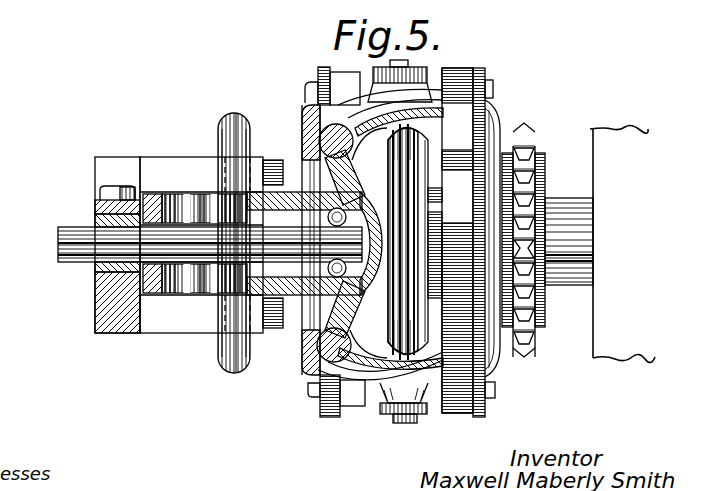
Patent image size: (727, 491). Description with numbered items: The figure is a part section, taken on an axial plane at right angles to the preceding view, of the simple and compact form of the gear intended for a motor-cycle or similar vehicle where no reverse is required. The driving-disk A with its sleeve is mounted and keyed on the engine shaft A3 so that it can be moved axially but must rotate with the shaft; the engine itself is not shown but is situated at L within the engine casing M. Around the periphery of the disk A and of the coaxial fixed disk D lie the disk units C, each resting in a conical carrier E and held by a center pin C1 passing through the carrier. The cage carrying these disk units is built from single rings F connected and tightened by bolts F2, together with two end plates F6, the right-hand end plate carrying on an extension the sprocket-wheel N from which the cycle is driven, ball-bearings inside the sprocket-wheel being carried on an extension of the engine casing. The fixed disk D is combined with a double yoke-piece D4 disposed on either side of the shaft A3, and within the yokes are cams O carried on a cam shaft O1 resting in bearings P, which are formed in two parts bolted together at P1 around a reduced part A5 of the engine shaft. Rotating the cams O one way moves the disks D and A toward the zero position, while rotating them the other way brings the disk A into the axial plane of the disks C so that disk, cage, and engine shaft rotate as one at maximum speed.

The driving-disk A is at (440, 368).
The engine shaft A3 is at (276, 328).
The reduced part of the shaft A5 is at (95, 248).
The disk unit C is at (482, 72).
The center pin C1 is at (403, 425).
The fixed disk D is at (312, 375).
The double yoke-piece D4 is at (140, 222).
The conical carrier E is at (387, 395).
The ring F is at (432, 118).
The bolt F2 is at (493, 92).
The end plate F6 is at (498, 120).
The engine location L is at (585, 252).
The engine casing M is at (592, 320).
The sprocket-wheel N is at (535, 150).
The cam O is at (210, 205).
The cam shaft O1 is at (234, 356).
The bearing P is at (190, 178).
The bearing bolt P1 is at (128, 184).